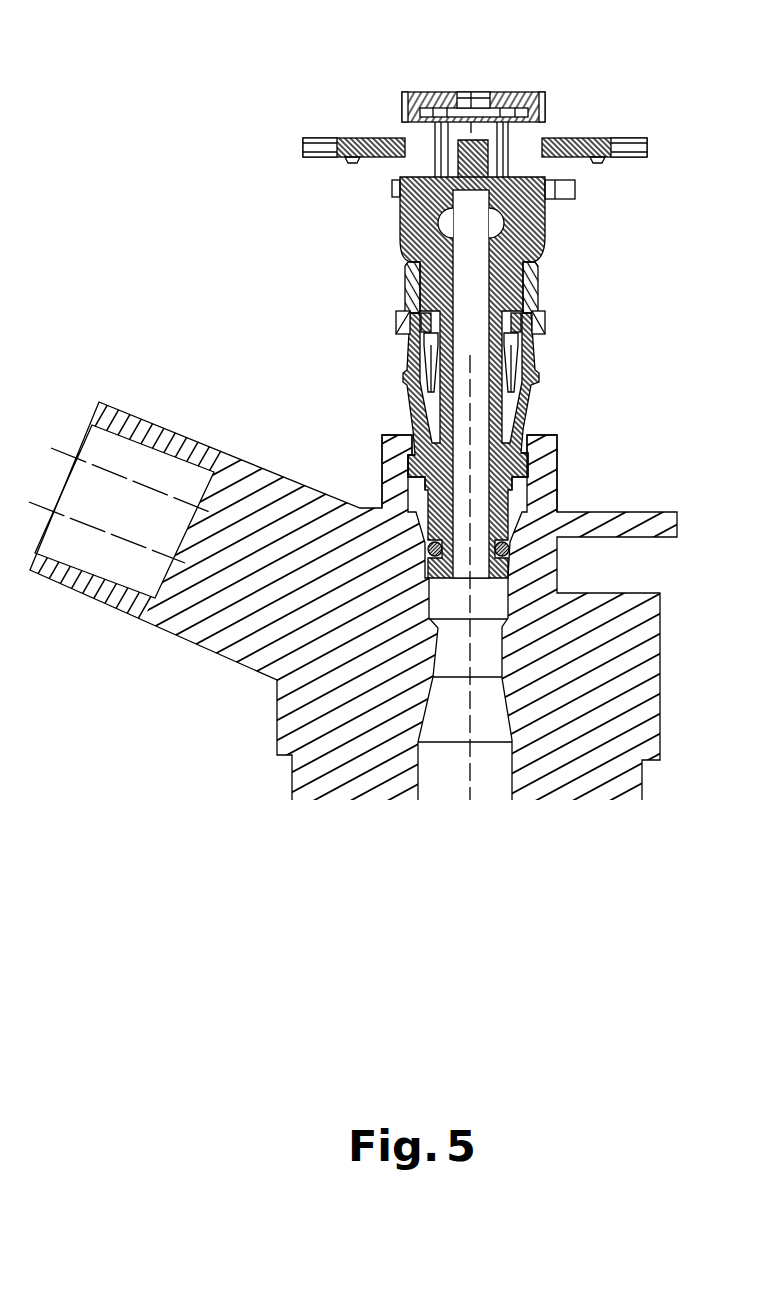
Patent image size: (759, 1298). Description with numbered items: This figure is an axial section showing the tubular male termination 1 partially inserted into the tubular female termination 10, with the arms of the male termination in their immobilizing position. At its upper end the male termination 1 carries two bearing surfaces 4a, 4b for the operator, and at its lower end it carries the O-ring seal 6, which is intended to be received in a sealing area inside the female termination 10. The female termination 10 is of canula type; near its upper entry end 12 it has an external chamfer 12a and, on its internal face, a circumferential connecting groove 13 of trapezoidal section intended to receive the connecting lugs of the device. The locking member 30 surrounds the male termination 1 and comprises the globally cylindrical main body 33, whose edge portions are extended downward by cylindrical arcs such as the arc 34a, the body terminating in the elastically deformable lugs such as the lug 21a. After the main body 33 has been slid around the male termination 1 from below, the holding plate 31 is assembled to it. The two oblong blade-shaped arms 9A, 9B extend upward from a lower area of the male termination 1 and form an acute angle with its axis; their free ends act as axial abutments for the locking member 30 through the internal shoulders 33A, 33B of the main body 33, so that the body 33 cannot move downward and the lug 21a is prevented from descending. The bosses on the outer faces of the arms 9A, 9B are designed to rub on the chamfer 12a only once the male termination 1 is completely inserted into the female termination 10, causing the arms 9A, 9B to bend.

The tubular male termination 1 is at (387, 204).
The bearing surface 4a is at (357, 137).
The bearing surface 4b is at (588, 138).
The O-ring seal 6 is at (509, 548).
The arm 9A is at (404, 372).
The arm 9B is at (538, 372).
The tubular female termination 10 is at (236, 668).
The entry end 12 is at (384, 441).
The chamfer 12a is at (530, 440).
The connecting groove 13 is at (533, 470).
The lug 21a is at (513, 380).
The locking member 30 is at (400, 270).
The holding plate 31 is at (425, 89).
The main body 33 is at (541, 283).
The internal shoulder 33A is at (408, 310).
The internal shoulder 33B is at (543, 307).
The cylindrical arc 34a is at (502, 141).